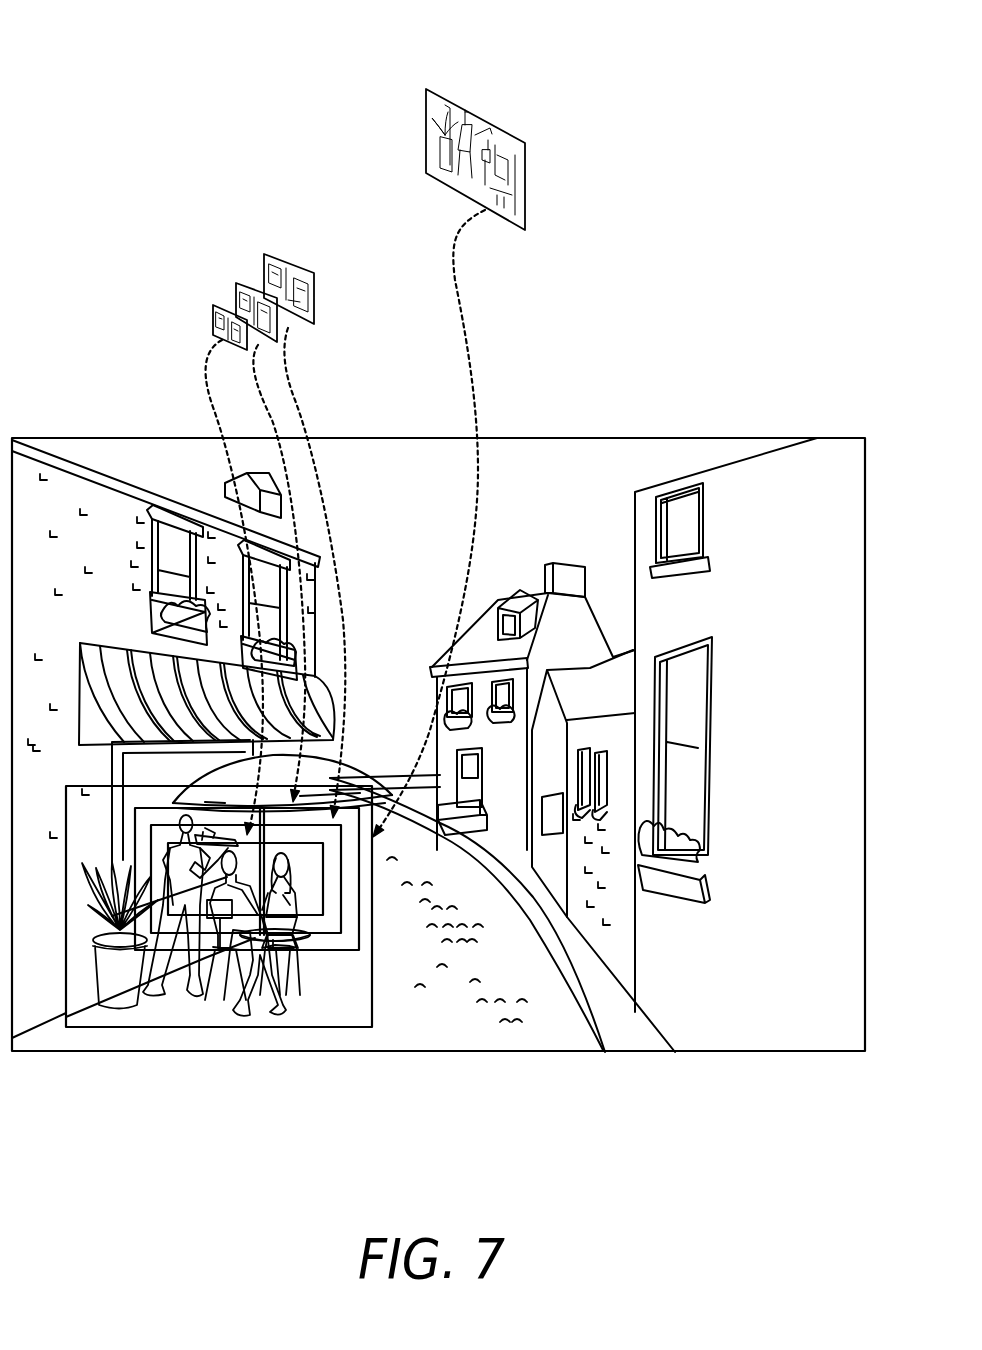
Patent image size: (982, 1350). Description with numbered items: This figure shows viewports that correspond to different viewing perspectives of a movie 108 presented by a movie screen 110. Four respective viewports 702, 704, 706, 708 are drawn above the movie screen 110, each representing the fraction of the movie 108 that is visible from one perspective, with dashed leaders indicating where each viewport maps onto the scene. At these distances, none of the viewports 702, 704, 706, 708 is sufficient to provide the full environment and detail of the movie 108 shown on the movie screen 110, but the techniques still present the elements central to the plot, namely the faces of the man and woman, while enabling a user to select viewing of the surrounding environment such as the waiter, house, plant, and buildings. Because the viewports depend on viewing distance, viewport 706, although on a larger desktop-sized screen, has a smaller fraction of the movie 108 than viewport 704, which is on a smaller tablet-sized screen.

The movie 108 is at (574, 457).
The movie screen 110 is at (685, 438).
The viewport 702 is at (208, 305).
The viewport 704 is at (233, 275).
The viewport 706 is at (260, 242).
The viewport 708 is at (424, 80).